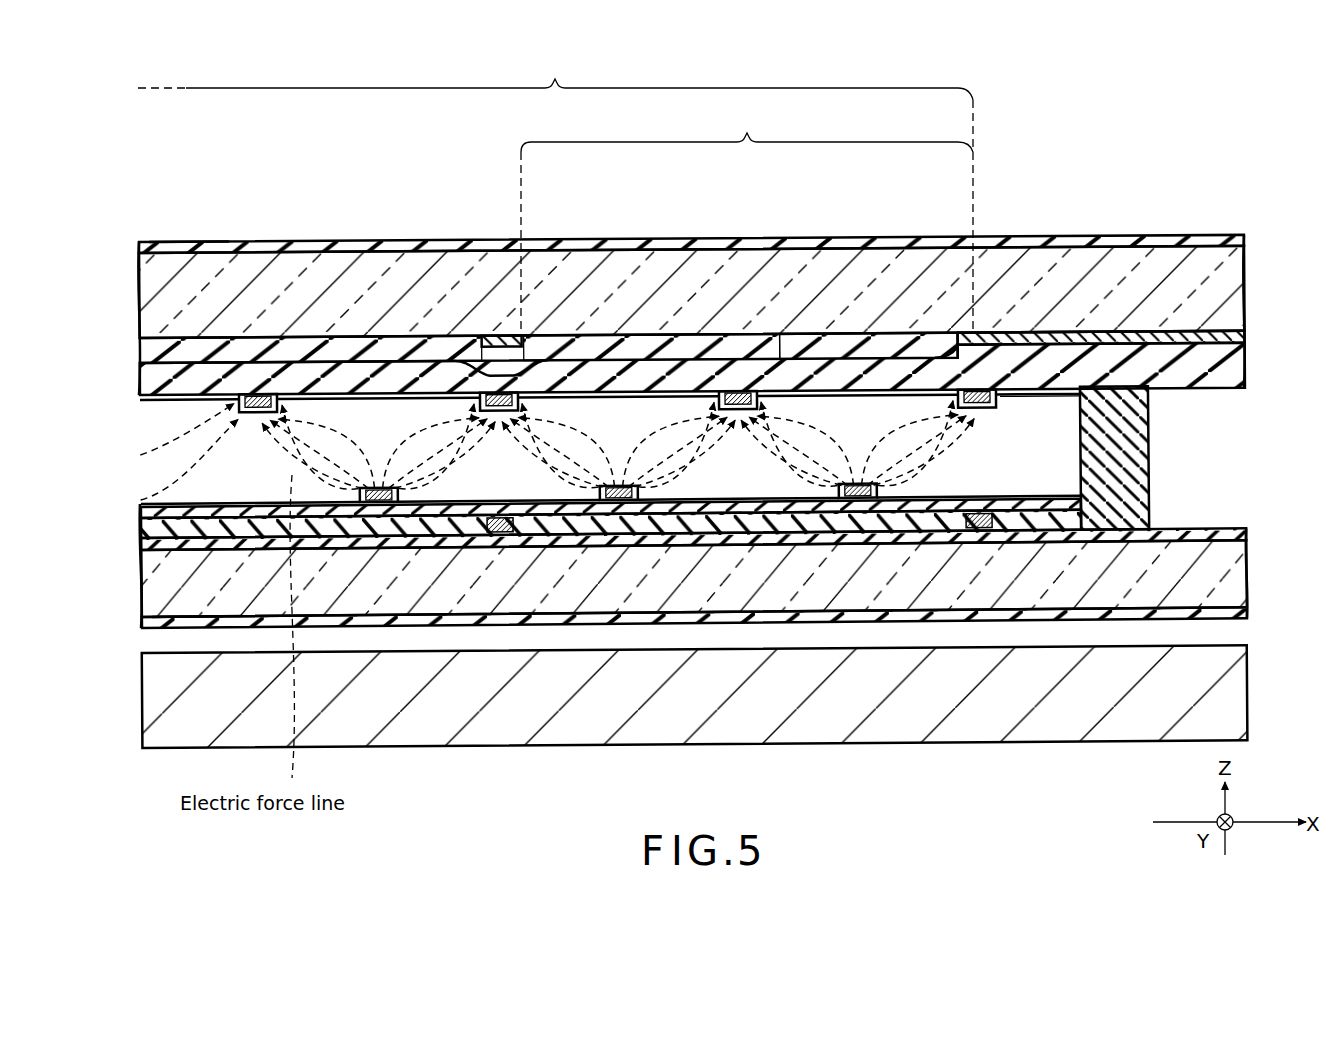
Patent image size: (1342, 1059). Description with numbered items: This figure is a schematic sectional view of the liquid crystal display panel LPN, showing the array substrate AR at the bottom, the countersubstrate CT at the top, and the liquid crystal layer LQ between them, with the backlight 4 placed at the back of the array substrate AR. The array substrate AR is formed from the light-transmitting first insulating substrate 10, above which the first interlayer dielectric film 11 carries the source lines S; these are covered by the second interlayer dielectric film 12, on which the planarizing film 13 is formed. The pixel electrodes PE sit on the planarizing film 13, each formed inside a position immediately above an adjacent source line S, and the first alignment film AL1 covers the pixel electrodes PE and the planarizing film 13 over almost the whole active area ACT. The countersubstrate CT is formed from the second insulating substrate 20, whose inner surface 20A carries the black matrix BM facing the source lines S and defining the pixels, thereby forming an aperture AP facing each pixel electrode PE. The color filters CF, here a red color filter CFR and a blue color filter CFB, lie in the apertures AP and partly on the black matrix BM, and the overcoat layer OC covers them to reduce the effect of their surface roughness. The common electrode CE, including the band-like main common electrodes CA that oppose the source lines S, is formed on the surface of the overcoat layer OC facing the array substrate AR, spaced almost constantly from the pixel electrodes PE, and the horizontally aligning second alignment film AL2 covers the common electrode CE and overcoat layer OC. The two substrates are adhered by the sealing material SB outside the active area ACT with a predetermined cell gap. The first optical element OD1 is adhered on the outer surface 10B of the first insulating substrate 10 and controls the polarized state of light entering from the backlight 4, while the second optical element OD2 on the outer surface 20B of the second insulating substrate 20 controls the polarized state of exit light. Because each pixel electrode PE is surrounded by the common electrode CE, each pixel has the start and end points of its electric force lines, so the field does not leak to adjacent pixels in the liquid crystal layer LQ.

The active area ACT is at (555, 190).
The aperture AP is at (747, 216).
The outer surface of the second insulating substrate 20B is at (176, 241).
The second optical element OD2 is at (140, 250).
The countersubstrate CT is at (130, 305).
The second insulating substrate 20 is at (1245, 284).
The color filters CF is at (142, 348).
The red color filter CFR is at (190, 348).
The blue color filter CFB is at (390, 347).
The black matrix BM is at (503, 337).
The overcoat layer OC is at (1245, 373).
The inner surface of the second insulating substrate 20A is at (166, 363).
The common electrode CE is at (225, 401).
The second alignment film AL2 is at (1075, 392).
The main common electrode CA is at (276, 393).
The liquid crystal layer LQ is at (140, 455).
The first alignment film AL1 is at (1078, 489).
The pixel electrode PE is at (378, 507).
The planarizing film 13 is at (966, 505).
The second interlayer dielectric film 12 is at (1013, 512).
The source line S is at (499, 535).
The first interlayer dielectric film 11 is at (1245, 533).
The first insulating substrate 10 is at (1235, 578).
The first optical element OD1 is at (140, 625).
The outer surface of the first insulating substrate 10B is at (176, 629).
The array substrate AR is at (130, 580).
The sealing material SB is at (1140, 450).
The backlight 4 is at (148, 712).
The liquid crystal display panel LPN is at (1258, 258).